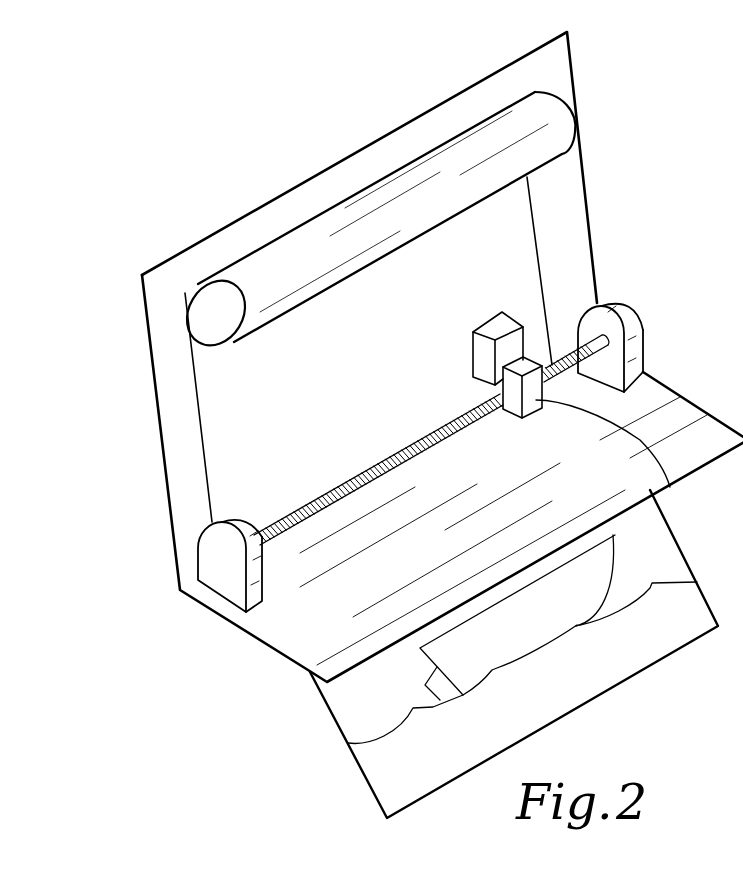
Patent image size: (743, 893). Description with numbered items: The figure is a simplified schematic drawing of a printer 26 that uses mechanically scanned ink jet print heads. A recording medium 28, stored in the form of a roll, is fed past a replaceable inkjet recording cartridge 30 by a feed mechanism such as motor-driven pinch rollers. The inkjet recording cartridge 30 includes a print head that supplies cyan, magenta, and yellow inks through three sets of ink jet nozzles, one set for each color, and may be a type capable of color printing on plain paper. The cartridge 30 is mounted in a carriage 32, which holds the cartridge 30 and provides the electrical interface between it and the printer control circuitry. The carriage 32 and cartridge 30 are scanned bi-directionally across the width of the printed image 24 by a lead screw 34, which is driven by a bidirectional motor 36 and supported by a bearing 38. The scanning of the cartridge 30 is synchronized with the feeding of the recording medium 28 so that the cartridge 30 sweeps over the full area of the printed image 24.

The printed image 24 is at (341, 732).
The printer 26 is at (149, 334).
The recording medium 28 is at (292, 250).
The inkjet recording cartridge 30 is at (495, 325).
The carriage 32 is at (670, 487).
The lead screw 34 is at (412, 440).
The bidirectional motor 36 is at (222, 567).
The bearing 38 is at (645, 330).